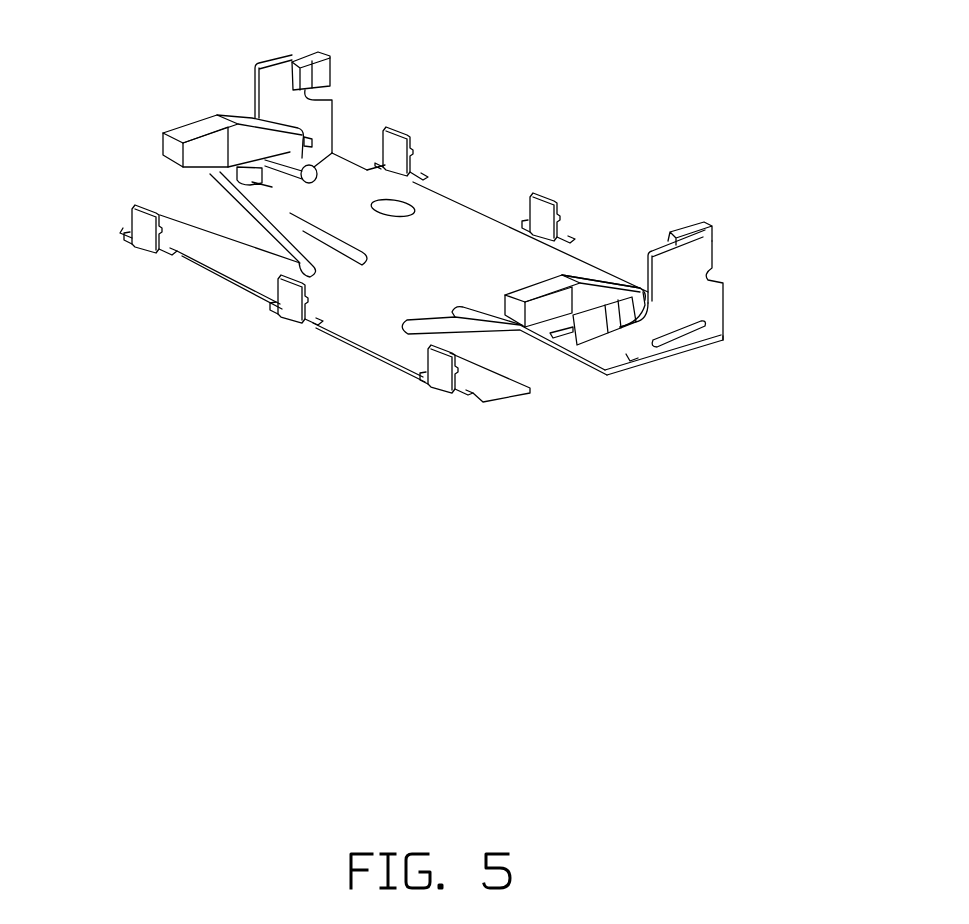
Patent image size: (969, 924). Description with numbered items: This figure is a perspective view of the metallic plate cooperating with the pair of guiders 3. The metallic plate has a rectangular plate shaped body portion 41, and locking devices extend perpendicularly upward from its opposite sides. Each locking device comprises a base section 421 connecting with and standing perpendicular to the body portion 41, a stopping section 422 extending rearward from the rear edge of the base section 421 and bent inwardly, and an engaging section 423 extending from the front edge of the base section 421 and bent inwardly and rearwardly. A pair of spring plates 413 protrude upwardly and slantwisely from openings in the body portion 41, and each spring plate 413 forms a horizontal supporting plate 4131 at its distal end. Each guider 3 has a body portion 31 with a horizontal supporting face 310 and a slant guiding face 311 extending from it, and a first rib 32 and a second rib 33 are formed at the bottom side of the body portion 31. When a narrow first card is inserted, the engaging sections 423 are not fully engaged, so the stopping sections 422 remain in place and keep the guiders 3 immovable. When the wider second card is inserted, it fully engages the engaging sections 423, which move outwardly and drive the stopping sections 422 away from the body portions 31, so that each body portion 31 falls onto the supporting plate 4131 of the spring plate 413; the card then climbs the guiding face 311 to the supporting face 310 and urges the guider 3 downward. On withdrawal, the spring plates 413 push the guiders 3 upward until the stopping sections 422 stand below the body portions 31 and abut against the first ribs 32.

The guider 3 is at (563, 272).
The body portion 31 is at (387, 215).
The horizontal supporting face 310 is at (200, 128).
The slant guiding face 311 is at (263, 122).
The first rib 32 is at (716, 385).
The second rib 33 is at (332, 153).
The body portion 41 is at (445, 222).
The spring plate 413 is at (267, 210).
The horizontal supporting plate 4131 is at (563, 338).
The base section 421 is at (680, 287).
The stopping section 422 is at (594, 344).
The engaging section 423 is at (322, 71).